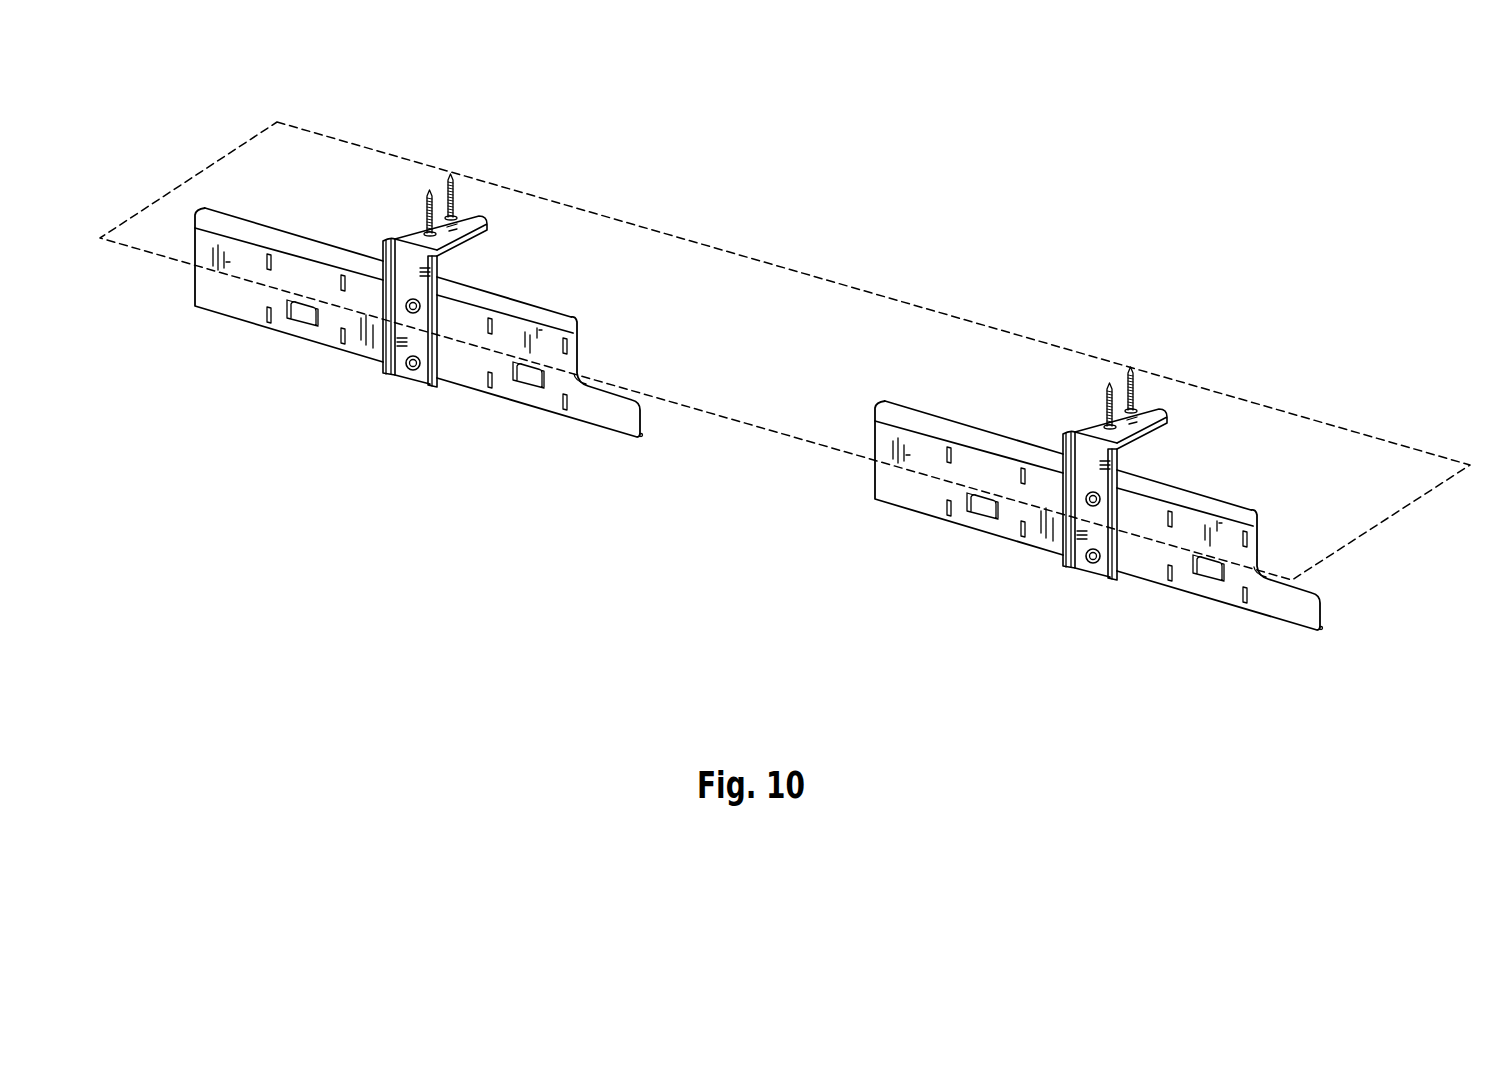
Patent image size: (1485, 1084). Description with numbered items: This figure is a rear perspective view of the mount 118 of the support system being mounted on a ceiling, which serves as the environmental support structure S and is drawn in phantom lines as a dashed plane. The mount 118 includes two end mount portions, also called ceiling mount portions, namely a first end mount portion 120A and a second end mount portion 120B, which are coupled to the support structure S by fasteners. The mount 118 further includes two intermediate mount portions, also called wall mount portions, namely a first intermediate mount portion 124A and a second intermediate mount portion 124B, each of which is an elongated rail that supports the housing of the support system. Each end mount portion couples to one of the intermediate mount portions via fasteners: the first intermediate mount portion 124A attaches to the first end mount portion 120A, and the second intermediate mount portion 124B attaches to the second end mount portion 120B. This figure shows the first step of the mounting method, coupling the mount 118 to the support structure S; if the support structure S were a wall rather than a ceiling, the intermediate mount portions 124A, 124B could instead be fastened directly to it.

The environmental support structure S is at (794, 268).
The mount 118 is at (684, 585).
The first end mount portion 120A is at (1178, 450).
The second end mount portion 120B is at (467, 217).
The first intermediate mount portion 124A is at (1099, 517).
The second intermediate mount portion 124B is at (235, 302).